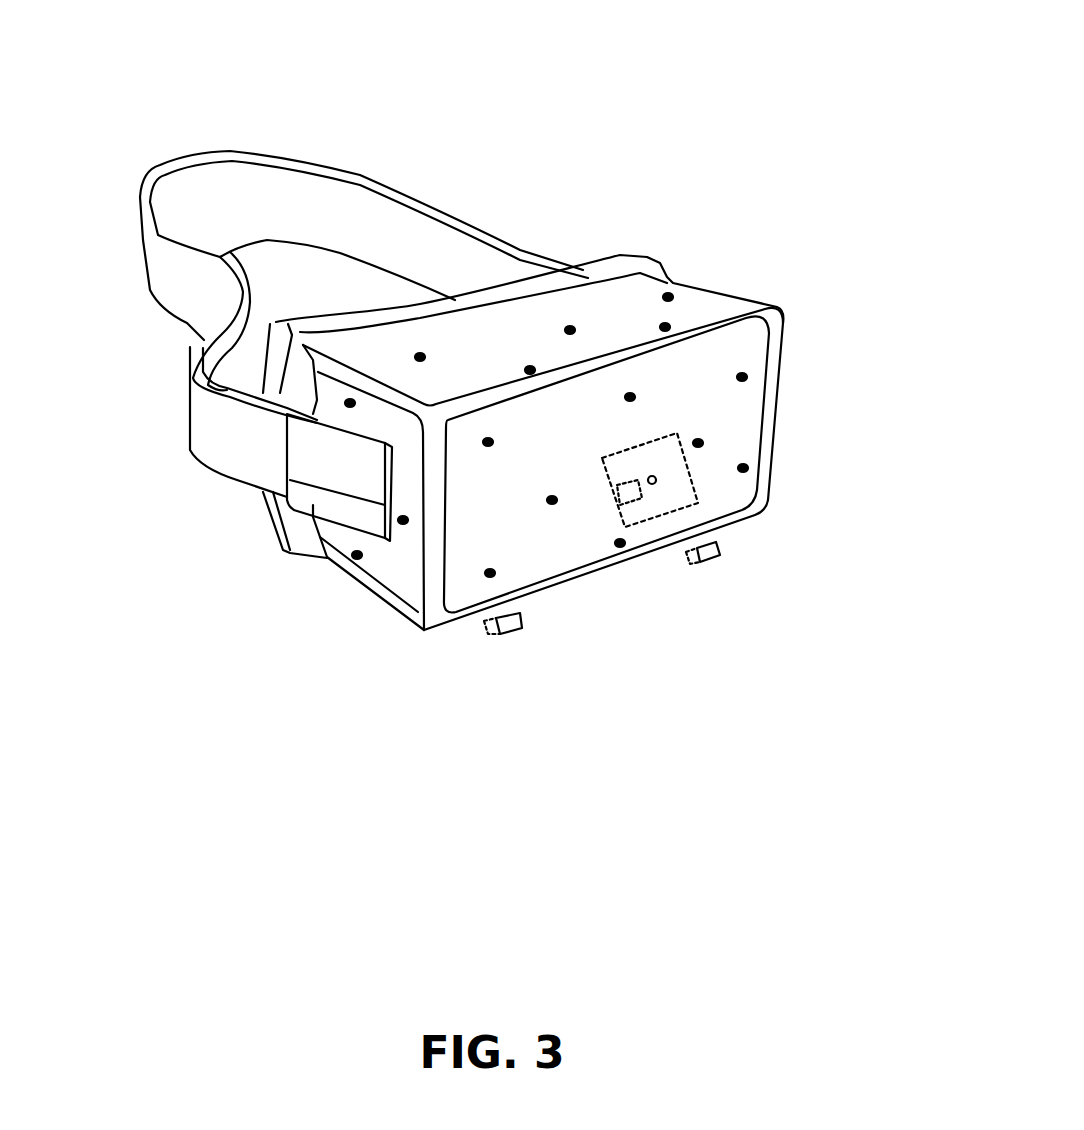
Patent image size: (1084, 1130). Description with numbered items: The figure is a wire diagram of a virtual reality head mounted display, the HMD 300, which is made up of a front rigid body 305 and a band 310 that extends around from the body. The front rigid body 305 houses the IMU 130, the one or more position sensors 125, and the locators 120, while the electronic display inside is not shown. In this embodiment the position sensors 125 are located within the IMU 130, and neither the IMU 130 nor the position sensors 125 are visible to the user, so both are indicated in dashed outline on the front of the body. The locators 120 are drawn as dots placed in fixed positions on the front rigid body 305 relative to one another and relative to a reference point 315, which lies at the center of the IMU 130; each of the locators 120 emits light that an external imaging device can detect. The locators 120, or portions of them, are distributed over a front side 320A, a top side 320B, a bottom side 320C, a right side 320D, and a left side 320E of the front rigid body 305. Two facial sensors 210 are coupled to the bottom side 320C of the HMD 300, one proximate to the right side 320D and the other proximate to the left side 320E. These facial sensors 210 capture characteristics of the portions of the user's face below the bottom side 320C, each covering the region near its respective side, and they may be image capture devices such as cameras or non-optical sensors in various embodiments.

The HMD 300 is at (497, 466).
The front rigid body 305 is at (795, 326).
The band 310 is at (508, 223).
The front side 320A is at (562, 566).
The top side 320B is at (382, 357).
The bottom side 320C is at (322, 585).
The right side 320D is at (389, 566).
The left side 320E is at (726, 286).
The locators 120 is at (715, 434).
The IMU 130 is at (714, 462).
The position sensors 125 is at (635, 508).
The reference point 315 is at (659, 506).
The facial sensors 210 is at (722, 580).